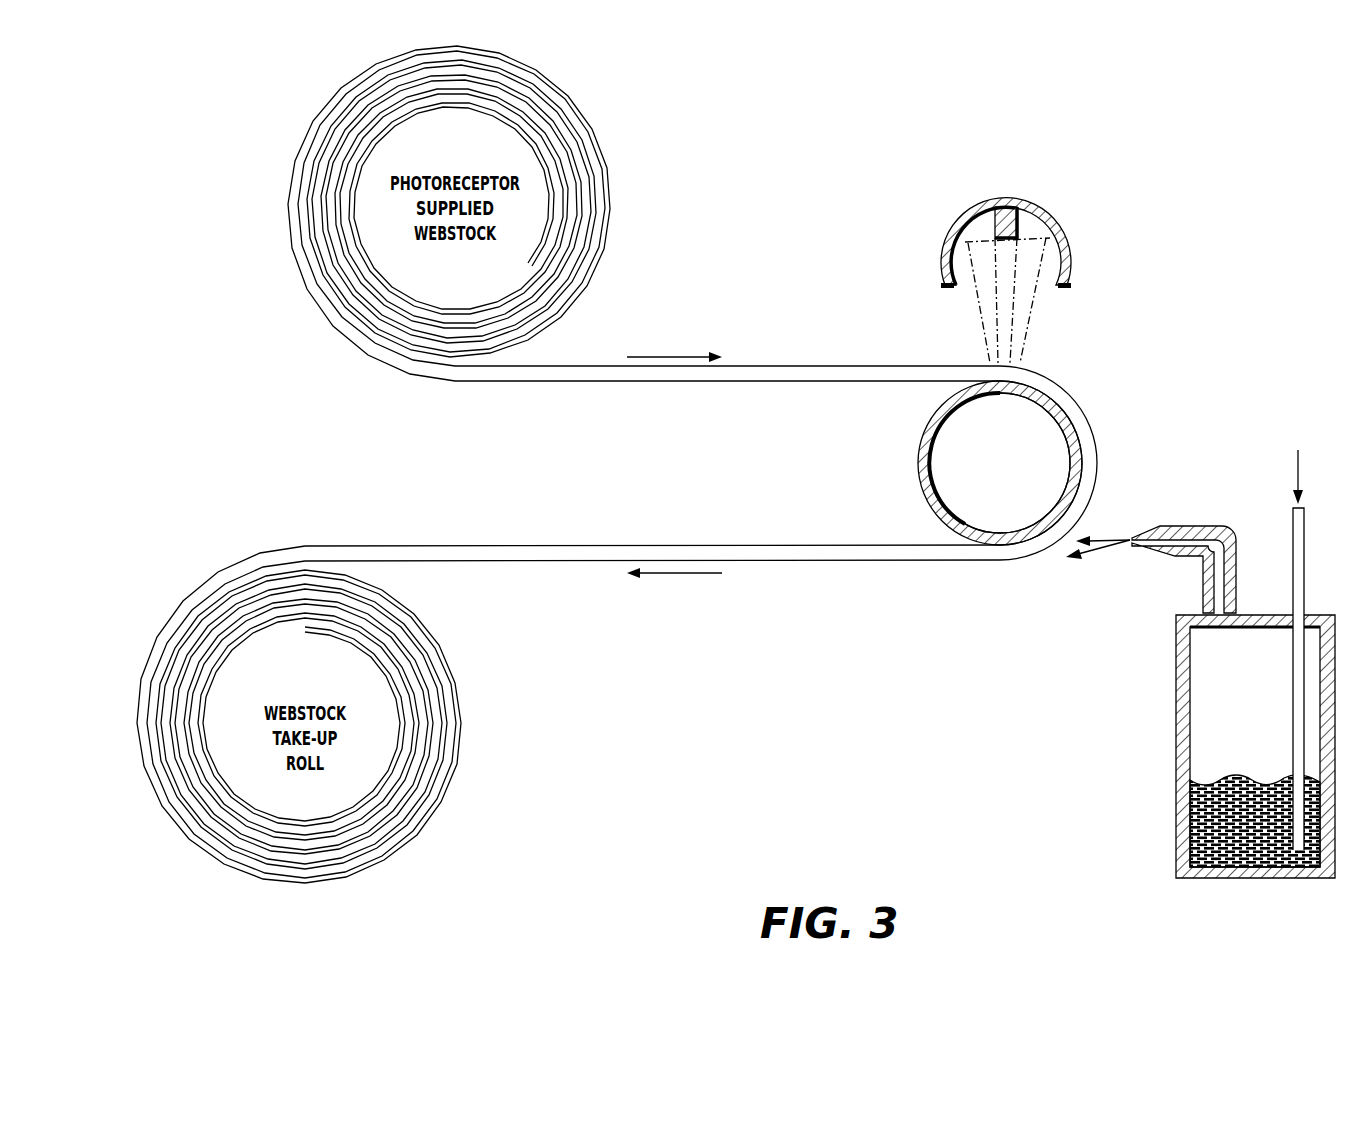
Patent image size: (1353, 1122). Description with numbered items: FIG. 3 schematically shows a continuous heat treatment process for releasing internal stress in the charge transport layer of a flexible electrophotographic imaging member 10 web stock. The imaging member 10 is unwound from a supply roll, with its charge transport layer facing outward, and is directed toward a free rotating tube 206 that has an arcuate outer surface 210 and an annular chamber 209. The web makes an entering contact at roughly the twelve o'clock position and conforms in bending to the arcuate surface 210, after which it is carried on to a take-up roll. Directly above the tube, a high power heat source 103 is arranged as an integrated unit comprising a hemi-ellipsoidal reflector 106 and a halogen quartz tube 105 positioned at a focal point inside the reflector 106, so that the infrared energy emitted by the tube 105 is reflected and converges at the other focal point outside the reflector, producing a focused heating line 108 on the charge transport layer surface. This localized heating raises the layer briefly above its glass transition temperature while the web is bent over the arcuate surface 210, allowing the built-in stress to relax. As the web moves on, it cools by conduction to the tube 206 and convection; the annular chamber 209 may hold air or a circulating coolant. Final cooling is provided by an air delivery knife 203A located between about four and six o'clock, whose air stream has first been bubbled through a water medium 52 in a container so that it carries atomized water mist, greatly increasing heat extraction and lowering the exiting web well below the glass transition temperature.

The imaging member 10 is at (548, 381).
The heat source 103 is at (990, 310).
The halogen quartz tube 105 is at (1006, 207).
The reflector 106 is at (1047, 224).
The focused heating line 108 is at (1004, 378).
The free rotating tube 206 is at (965, 458).
The annular chamber 209 is at (975, 490).
The arcuate outer surface 210 is at (1062, 413).
The air delivery knife 203A is at (1143, 563).
The water medium 52 is at (1236, 780).